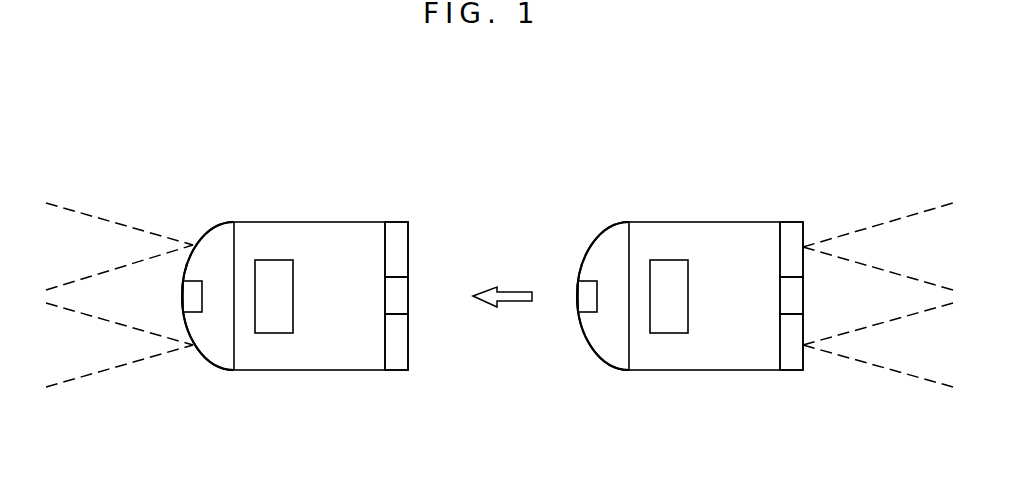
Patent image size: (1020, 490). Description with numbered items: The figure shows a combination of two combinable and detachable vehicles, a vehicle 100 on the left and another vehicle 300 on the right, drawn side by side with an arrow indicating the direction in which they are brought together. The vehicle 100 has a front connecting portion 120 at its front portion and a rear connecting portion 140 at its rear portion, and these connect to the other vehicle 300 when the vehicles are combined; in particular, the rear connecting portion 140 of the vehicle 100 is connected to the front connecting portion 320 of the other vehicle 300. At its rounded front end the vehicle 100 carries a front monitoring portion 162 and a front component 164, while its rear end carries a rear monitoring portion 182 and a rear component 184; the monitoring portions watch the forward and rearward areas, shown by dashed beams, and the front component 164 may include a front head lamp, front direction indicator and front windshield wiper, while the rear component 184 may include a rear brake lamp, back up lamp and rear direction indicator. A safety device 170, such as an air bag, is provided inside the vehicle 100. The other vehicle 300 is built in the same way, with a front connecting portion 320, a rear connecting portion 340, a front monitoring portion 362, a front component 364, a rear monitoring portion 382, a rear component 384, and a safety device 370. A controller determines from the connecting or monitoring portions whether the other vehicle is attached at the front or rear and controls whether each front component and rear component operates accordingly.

The vehicle 100 is at (320, 370).
The front connecting portion 120 is at (187, 298).
The rear connecting portion 140 is at (400, 302).
The front monitoring portion 162 is at (218, 245).
The front component 164 is at (208, 333).
The safety device 170 is at (273, 273).
The rear monitoring portion 182 is at (397, 238).
The rear component 184 is at (396, 342).
The other vehicle 300 is at (715, 370).
The front connecting portion 320 is at (583, 298).
The rear connecting portion 340 is at (787, 303).
The front monitoring portion 362 is at (614, 245).
The front component 364 is at (603, 333).
The safety device 370 is at (668, 273).
The rear monitoring portion 382 is at (792, 238).
The rear component 384 is at (791, 342).